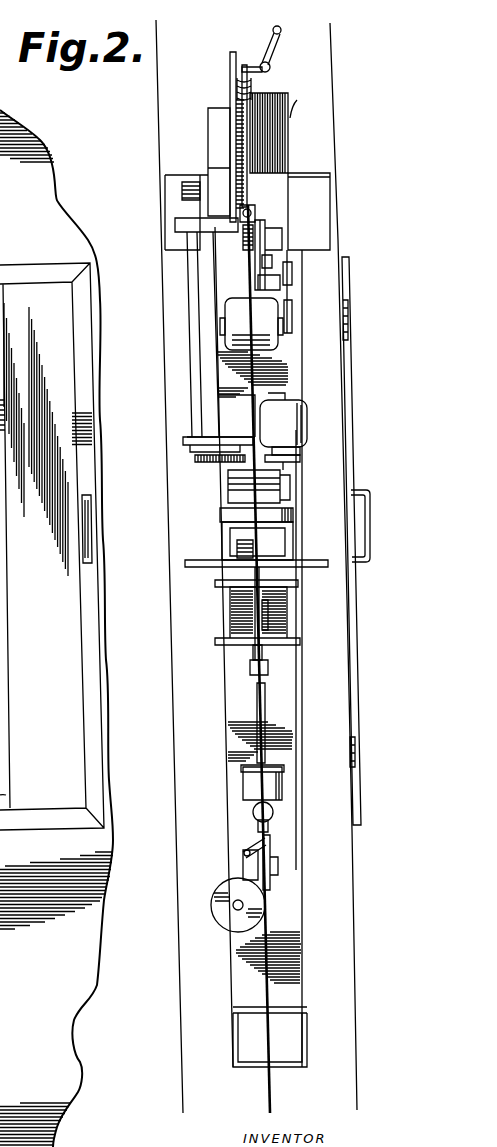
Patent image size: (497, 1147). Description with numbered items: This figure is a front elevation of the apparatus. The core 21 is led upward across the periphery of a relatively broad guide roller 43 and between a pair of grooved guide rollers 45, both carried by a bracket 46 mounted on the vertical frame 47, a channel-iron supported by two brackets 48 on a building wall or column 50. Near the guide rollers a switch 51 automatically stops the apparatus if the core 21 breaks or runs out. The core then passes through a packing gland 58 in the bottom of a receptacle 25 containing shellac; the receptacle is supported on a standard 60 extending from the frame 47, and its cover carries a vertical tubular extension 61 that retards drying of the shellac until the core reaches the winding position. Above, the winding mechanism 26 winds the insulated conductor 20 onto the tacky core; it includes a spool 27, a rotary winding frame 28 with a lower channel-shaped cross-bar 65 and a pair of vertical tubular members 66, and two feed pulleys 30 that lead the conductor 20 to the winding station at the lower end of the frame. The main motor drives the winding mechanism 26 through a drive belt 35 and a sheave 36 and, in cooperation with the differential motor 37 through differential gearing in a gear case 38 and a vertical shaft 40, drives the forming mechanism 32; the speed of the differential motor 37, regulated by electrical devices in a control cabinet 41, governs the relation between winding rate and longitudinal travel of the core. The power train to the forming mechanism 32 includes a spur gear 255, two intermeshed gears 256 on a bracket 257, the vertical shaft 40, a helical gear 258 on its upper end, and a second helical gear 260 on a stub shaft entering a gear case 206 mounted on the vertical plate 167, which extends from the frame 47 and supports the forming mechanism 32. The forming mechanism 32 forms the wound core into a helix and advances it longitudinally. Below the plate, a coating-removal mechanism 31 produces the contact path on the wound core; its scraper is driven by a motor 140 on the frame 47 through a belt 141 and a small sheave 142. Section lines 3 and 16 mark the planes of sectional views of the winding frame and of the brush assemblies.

The forming mechanism 32 is at (222, 140).
The gear case 206 is at (211, 166).
The second helical gear 260 is at (195, 186).
The helical gear 258 is at (185, 193).
The vertical plate 167 is at (226, 204).
The coating-removal mechanism 31 is at (273, 220).
The brackets 48 is at (322, 212).
The small sheave 142 is at (295, 265).
The belt 141 is at (290, 302).
The motor 140 is at (272, 345).
The vertical shaft 40 is at (192, 330).
The differential motor 37 is at (300, 410).
The spur gear 255 is at (305, 445).
The bracket 257 is at (195, 437).
The intermeshed gears 256 is at (210, 462).
The sheave 36 is at (287, 498).
The drive belt 35 is at (292, 515).
The gear case 38 is at (228, 487).
The section line 16- 16 is at (302, 540).
The winding frame 28 is at (197, 573).
The spool 27 is at (300, 582).
The vertical tubular members 66 is at (258, 596).
The winding mechanism 26 is at (300, 620).
The feed pulleys 30 is at (258, 618).
The insulated conductor 20 is at (250, 648).
The lower channel-shaped cross-bar 65 is at (268, 668).
The vertical tubular extension 61 is at (260, 725).
The control cabinet 41 is at (358, 723).
The receptacle 25 is at (283, 785).
The standard 60 is at (255, 810).
The packing gland 58 is at (268, 824).
The switch 51 is at (233, 847).
The bracket 46 is at (240, 862).
The grooved guide rollers 45 is at (268, 885).
The guide roller 43 is at (215, 905).
The building wall or column 50 is at (350, 946).
The vertical frame 47 is at (232, 970).
The core 21 is at (300, 985).
The section line 3- 3 is at (250, 442).